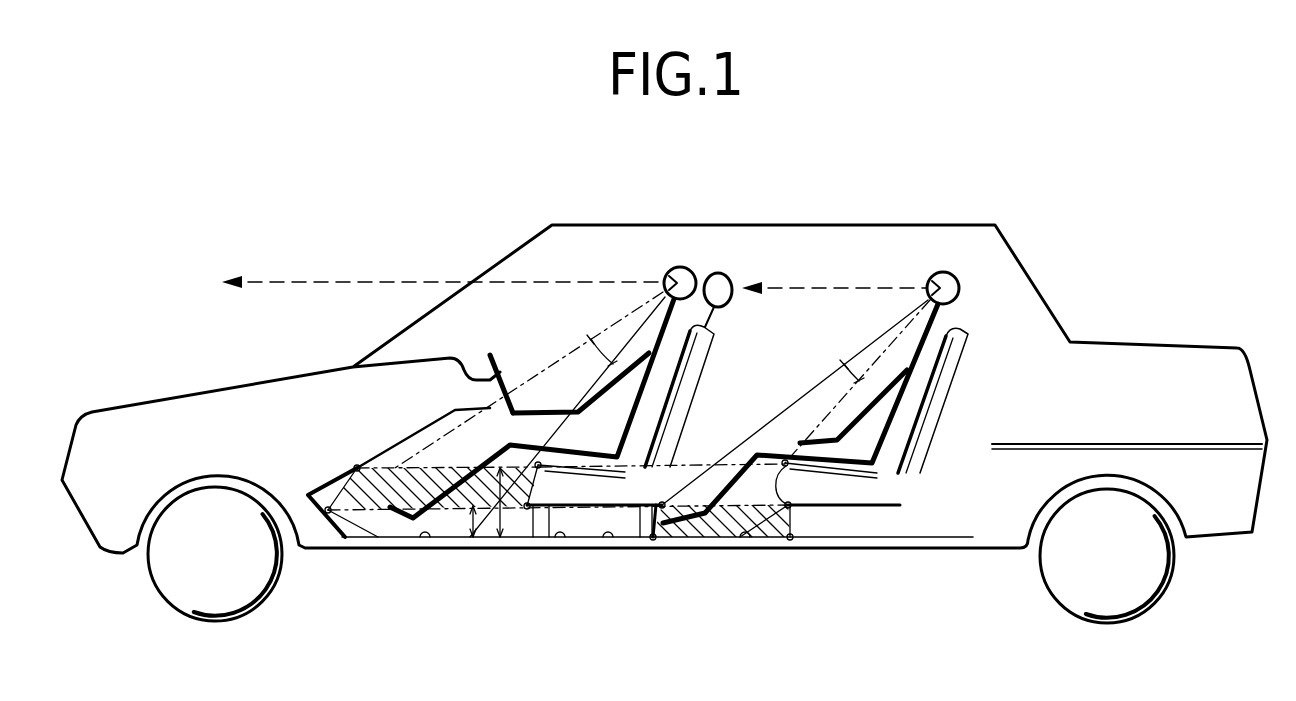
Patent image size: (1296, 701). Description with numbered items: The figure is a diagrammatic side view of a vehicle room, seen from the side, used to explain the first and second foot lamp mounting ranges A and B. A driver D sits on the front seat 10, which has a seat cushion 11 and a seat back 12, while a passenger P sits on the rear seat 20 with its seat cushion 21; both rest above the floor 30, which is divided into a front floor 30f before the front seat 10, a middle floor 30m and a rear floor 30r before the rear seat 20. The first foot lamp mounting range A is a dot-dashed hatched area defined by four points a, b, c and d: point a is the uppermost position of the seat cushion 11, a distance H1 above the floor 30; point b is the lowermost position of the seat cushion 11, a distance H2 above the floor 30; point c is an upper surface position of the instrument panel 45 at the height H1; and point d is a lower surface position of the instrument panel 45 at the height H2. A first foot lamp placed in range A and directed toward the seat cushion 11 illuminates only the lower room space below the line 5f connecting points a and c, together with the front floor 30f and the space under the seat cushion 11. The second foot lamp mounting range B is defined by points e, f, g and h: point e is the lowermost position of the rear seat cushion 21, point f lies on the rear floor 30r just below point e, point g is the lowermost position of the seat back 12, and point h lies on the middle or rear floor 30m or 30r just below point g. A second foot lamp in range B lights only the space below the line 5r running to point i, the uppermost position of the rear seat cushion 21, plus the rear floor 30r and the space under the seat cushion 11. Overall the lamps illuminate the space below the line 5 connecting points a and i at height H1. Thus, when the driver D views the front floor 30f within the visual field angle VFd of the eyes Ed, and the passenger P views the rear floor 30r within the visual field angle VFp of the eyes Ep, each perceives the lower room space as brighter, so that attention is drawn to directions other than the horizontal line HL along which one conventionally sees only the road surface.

The line connecting uppermost seat cushion positions 5 is at (636, 466).
The line between points a and c 5f is at (451, 472).
The line between points g and i 5r is at (697, 468).
The front seat 10 is at (700, 346).
The seat cushion 11 is at (592, 488).
The seat back 12 is at (688, 404).
The rear seat 20 is at (957, 327).
The seat cushion 21 is at (880, 495).
The floor 30 is at (608, 539).
The front floor 30f is at (424, 537).
The middle floor 30m is at (560, 538).
The rear floor 30r is at (745, 539).
The instrument panel 45 is at (403, 452).
The driver D is at (695, 271).
The eyes of the driver Ed is at (679, 267).
The passenger P is at (946, 272).
The eyes of the passenger Ep is at (930, 276).
The horizontal line HL is at (288, 279).
The visual field angle of the driver VFd is at (600, 352).
The visual field angle of the passenger VFp is at (846, 366).
The distance H1 is at (500, 512).
The distance H2 is at (472, 528).
The first foot lamp mounting range A is at (375, 505).
The second foot lamp mounting range B is at (780, 545).
The point a is at (542, 462).
The point b is at (527, 510).
The point c is at (354, 467).
The point d is at (326, 512).
The point e is at (789, 503).
The point f is at (792, 540).
The point g is at (660, 503).
The point h is at (655, 540).
The point i is at (786, 460).